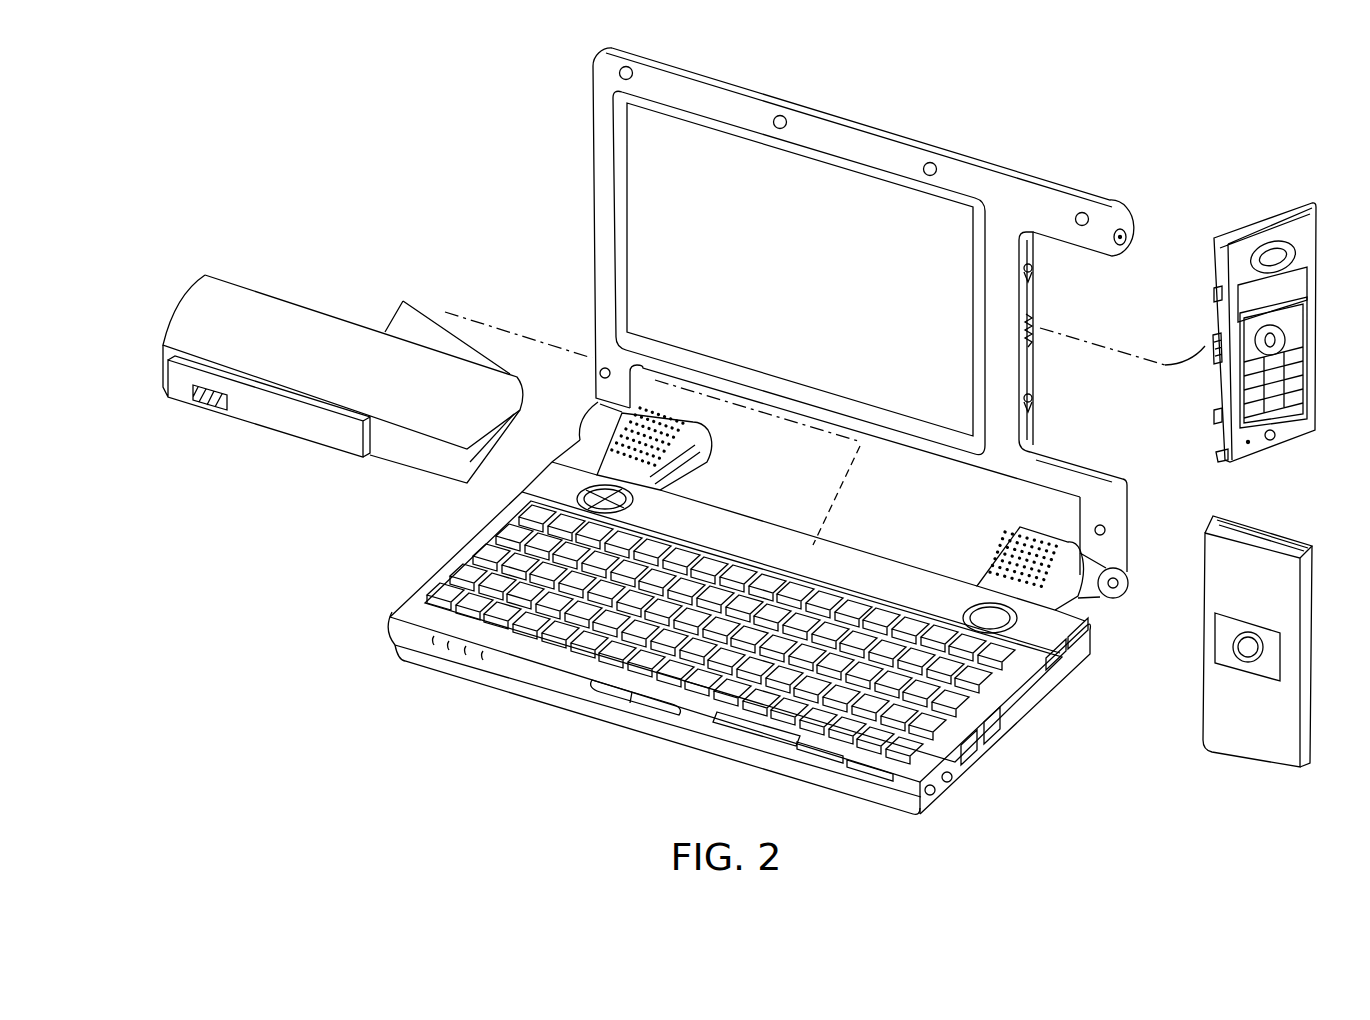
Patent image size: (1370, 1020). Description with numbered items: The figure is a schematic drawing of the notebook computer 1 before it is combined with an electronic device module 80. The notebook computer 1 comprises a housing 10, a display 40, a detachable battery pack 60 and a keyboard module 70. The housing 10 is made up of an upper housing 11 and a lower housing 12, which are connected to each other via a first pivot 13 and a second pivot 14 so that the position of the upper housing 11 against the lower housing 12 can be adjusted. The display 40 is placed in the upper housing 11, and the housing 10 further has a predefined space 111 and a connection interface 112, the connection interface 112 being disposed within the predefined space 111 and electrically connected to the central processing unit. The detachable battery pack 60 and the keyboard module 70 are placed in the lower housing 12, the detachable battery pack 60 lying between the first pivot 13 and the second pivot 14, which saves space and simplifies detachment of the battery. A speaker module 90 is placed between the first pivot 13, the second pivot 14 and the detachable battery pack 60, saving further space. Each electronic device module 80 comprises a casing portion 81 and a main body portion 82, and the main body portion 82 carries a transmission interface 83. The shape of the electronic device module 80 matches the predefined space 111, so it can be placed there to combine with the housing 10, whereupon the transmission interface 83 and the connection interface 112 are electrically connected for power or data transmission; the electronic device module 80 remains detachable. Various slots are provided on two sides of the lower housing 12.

The notebook computer 1 is at (1150, 153).
The housing 10 is at (1022, 694).
The upper housing 11 is at (876, 150).
The lower housing 12 is at (396, 611).
The first pivot 13 is at (597, 420).
The second pivot 14 is at (1084, 589).
The display 40 is at (645, 190).
The detachable battery pack 60 is at (332, 326).
The keyboard module 70 is at (565, 610).
The electronic device module 80 is at (1300, 570).
The casing portion 81 is at (1294, 236).
The main body portion 82 is at (1300, 372).
The transmission interface 83 is at (1212, 340).
The speaker module 90 is at (694, 438).
The predefined space 111 is at (1103, 408).
The connection interface 112 is at (1037, 320).